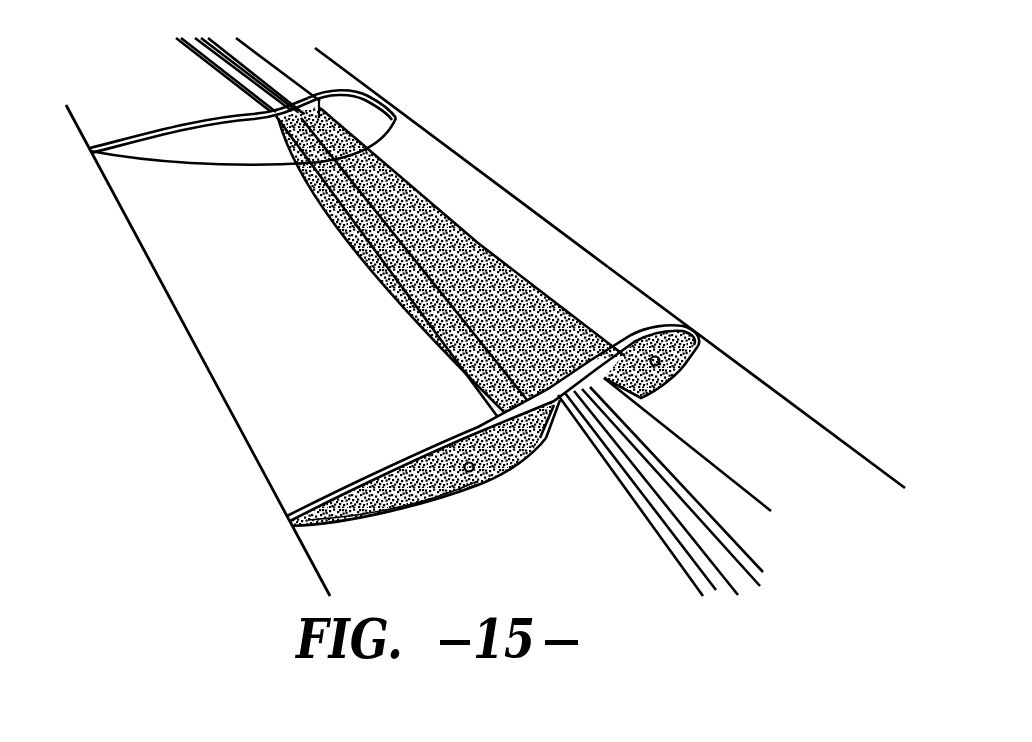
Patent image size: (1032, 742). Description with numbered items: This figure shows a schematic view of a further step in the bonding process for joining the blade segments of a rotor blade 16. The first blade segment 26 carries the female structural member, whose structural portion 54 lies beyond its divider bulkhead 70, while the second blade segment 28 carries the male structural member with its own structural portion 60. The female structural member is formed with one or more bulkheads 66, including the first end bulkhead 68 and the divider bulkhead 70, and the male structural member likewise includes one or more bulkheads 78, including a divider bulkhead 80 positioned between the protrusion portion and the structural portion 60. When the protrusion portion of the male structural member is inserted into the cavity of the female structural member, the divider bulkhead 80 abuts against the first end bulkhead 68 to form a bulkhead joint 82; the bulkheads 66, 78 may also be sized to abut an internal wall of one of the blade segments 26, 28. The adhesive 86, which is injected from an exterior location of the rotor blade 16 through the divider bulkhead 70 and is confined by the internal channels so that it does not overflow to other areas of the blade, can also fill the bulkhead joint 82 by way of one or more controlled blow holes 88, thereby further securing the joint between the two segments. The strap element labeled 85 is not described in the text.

The rotor blade 16 is at (564, 153).
The first blade segment 26 is at (606, 256).
The second blade segment 28 is at (813, 414).
The structural portion 54 is at (262, 58).
The structural portion 60 is at (690, 428).
The bulkheads 66 is at (188, 160).
The first end bulkhead 68 is at (414, 440).
The divider bulkhead 70 is at (240, 146).
The bulkheads 78 is at (392, 500).
The divider bulkhead 80 is at (472, 481).
The bulkhead joint 82 is at (703, 312).
The strap 85 is at (236, 116).
The adhesive 86 is at (367, 258).
The controlled blow holes 88 is at (461, 453).